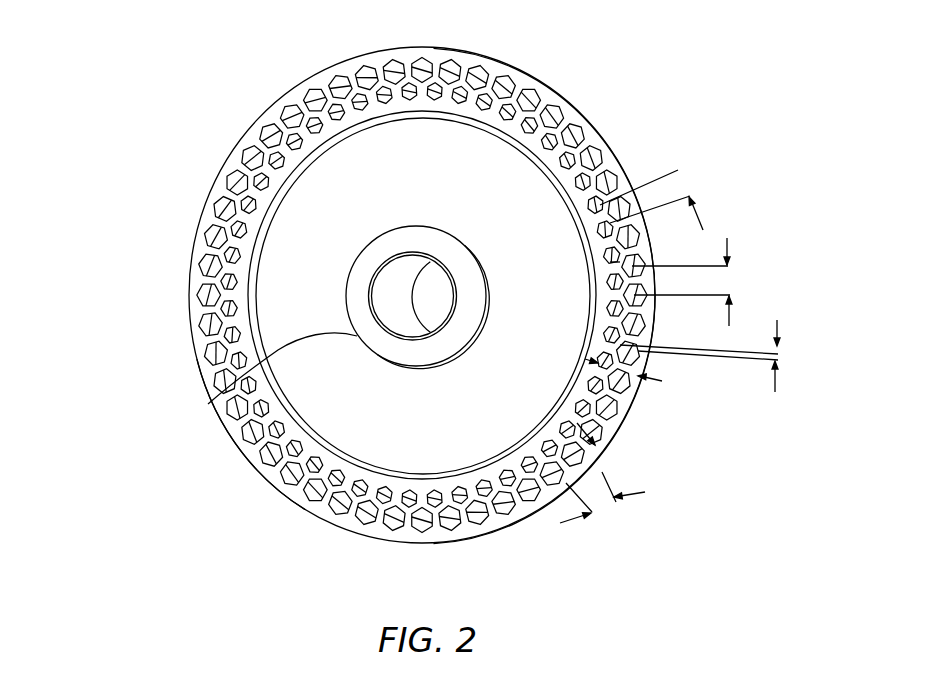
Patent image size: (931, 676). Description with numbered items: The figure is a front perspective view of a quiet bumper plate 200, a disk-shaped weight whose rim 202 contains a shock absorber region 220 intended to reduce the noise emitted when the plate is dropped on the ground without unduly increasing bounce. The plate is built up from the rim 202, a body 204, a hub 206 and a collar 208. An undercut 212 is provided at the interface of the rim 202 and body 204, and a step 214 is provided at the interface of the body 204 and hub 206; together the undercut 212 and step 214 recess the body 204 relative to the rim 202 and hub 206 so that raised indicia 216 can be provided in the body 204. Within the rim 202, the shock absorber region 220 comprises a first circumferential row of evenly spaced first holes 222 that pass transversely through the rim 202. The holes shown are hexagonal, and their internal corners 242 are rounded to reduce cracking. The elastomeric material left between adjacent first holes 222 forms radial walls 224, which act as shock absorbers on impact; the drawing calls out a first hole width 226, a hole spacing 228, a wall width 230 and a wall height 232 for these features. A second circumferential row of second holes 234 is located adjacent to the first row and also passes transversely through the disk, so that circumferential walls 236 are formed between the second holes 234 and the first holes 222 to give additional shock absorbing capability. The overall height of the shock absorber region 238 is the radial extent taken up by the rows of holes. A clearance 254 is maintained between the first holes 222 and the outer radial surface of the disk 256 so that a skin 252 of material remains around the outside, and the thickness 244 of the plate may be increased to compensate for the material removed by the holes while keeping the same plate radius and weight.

The quiet bumper plate 200 is at (100, 118).
The rim 202 is at (330, 155).
The body 204 is at (300, 120).
The hub 206 is at (386, 243).
The collar 208 is at (378, 265).
The undercut 212 is at (273, 285).
The step 214 is at (210, 387).
The raised indicia 216 is at (290, 250).
The shock absorber region 220 is at (504, 84).
The first holes 222 is at (533, 99).
The radial walls 224 is at (560, 125).
The first hole width 226 is at (677, 168).
The hole spacing 228 is at (728, 238).
The wall width 230 is at (777, 322).
The wall height 232 is at (662, 381).
The second holes 234 is at (484, 490).
The circumferential walls 236 is at (615, 262).
The overall height of the shock absorber region 238 is at (604, 416).
The internal corners 242 is at (530, 495).
The thickness of the plate 244 is at (645, 492).
The skin 252 is at (283, 485).
The clearance 254 is at (285, 507).
The outer radial surface of the disk 256 is at (633, 417).